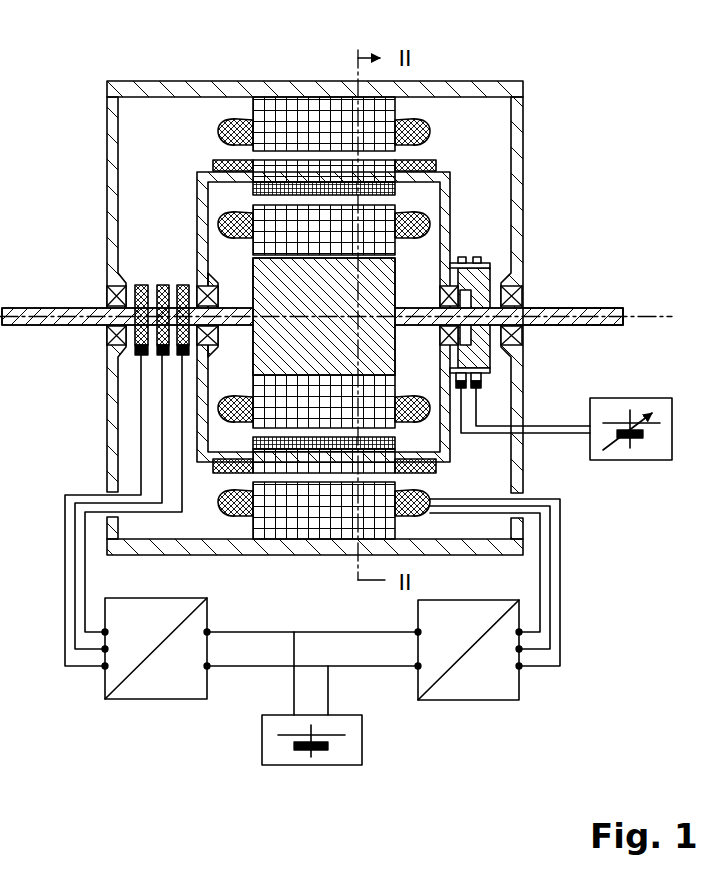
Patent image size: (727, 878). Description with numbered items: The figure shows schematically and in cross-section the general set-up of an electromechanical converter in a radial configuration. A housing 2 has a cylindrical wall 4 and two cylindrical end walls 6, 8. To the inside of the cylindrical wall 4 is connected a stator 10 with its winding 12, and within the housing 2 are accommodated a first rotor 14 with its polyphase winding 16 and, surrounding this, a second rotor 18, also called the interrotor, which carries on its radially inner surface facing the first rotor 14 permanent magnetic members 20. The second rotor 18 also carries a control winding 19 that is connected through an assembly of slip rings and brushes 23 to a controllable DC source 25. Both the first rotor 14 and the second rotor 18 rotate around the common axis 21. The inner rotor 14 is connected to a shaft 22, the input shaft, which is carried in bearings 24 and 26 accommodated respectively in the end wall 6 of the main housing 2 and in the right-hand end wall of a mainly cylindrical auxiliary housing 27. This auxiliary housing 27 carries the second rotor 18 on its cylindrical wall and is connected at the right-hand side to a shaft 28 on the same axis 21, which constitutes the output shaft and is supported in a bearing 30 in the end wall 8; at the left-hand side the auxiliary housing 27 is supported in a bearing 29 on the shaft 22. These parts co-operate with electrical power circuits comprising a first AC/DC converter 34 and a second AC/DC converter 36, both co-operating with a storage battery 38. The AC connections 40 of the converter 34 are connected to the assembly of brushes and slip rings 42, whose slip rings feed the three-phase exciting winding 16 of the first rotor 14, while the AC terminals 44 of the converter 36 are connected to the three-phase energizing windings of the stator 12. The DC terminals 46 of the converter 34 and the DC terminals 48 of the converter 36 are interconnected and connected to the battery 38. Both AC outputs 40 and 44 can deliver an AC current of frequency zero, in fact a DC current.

The housing 2 is at (318, 287).
The cylindrical wall 4 is at (163, 88).
The end wall 6 is at (112, 196).
The end wall 8 is at (515, 119).
The stator 10 is at (325, 125).
The stator winding 12 is at (220, 131).
The first rotor 14 is at (385, 234).
The polyphase winding 16 is at (220, 225).
The second rotor 18 is at (385, 171).
The control winding 19 is at (215, 166).
The permanent magnetic members 20 is at (385, 191).
The common axis 21 is at (636, 320).
The shaft 22 is at (25, 308).
The slip rings and brushes 23 is at (478, 388).
The bearing 24 is at (112, 346).
The controllable DC source 25 is at (620, 460).
The bearing 26 is at (462, 340).
The auxiliary housing 27 is at (200, 263).
The shaft 28 is at (600, 311).
The bearing 29 is at (198, 348).
The bearing 30 is at (512, 300).
The first AC/DC converter 34 is at (156, 690).
The second AC/DC converter 36 is at (468, 692).
The storage battery 38 is at (347, 751).
The AC connections 40 is at (105, 667).
The brushes and slip rings 42 is at (142, 356).
The AC terminals 44 is at (521, 670).
The DC terminals 46 is at (212, 633).
The DC terminals 48 is at (416, 632).